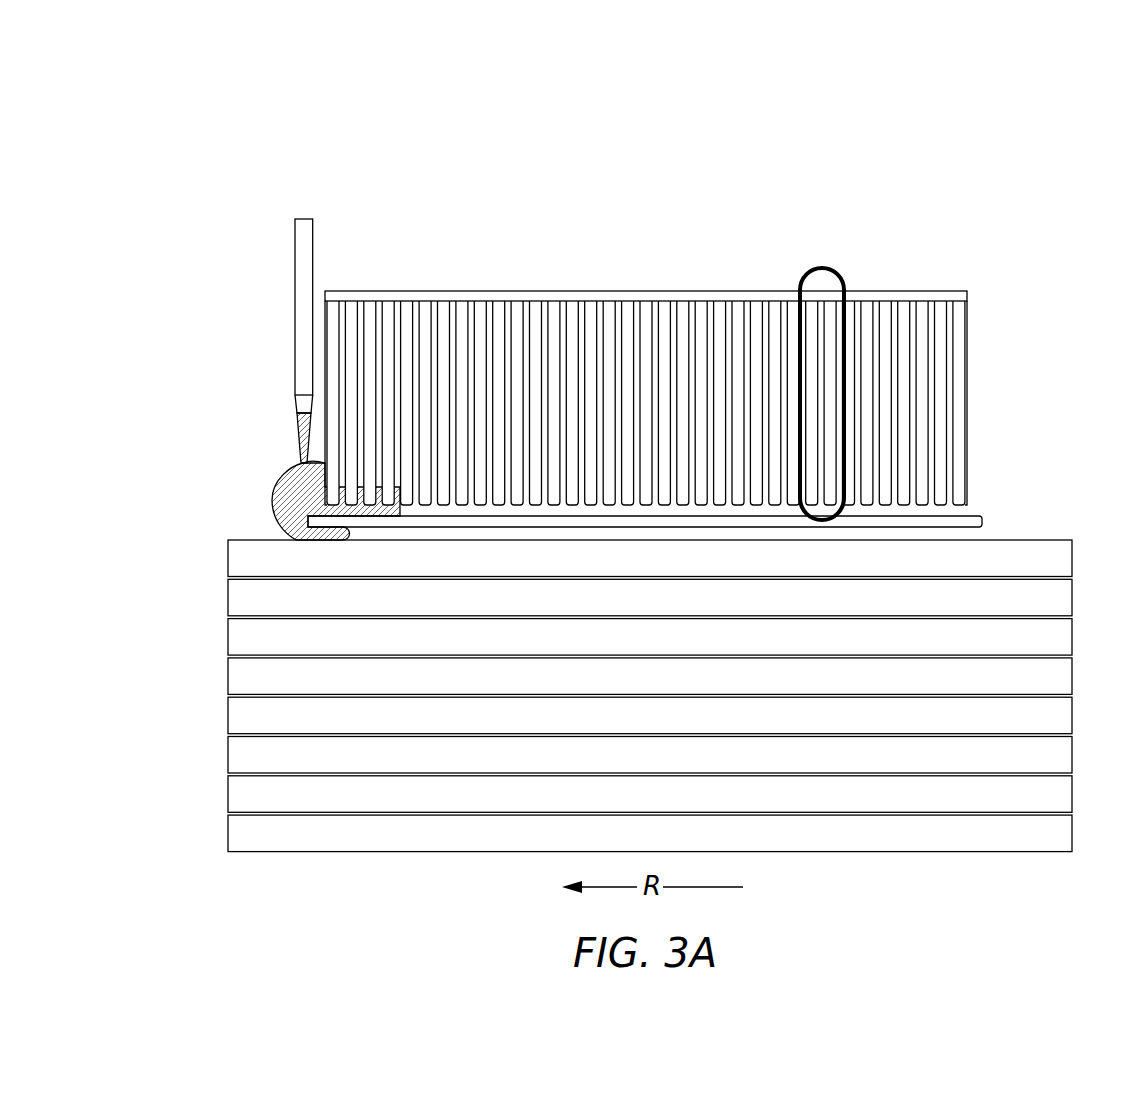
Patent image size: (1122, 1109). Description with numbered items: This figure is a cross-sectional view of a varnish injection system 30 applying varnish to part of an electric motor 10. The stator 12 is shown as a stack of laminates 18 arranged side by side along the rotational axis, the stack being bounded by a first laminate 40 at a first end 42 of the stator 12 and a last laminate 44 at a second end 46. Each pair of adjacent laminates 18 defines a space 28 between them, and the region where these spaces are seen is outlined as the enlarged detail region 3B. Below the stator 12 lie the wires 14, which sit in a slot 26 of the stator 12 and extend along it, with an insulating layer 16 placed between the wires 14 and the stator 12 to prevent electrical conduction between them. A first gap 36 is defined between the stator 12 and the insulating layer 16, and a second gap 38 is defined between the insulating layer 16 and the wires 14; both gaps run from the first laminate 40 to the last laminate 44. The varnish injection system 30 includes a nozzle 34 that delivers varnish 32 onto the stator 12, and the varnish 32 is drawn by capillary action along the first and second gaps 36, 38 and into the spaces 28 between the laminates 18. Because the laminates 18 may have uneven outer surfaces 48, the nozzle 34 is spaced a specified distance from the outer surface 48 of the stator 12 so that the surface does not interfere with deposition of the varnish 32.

The electric motor 10 is at (188, 199).
The stator 12 is at (662, 351).
The wires 14 is at (228, 558).
The insulating layer 16 is at (982, 518).
The laminates 18 is at (405, 308).
The slot 26 is at (265, 529).
The space 28 is at (342, 323).
The varnish injection system 30 is at (284, 265).
The varnish 32 is at (298, 472).
The nozzle 34 is at (293, 405).
The first gap 36 is at (975, 503).
The second gap 38 is at (990, 532).
The first laminate 40 is at (333, 372).
The first end 42 is at (327, 315).
The last laminate 44 is at (960, 373).
The second end 46 is at (967, 314).
The outer surface 48 is at (327, 342).
The detail region for FIG. 3B is at (832, 275).